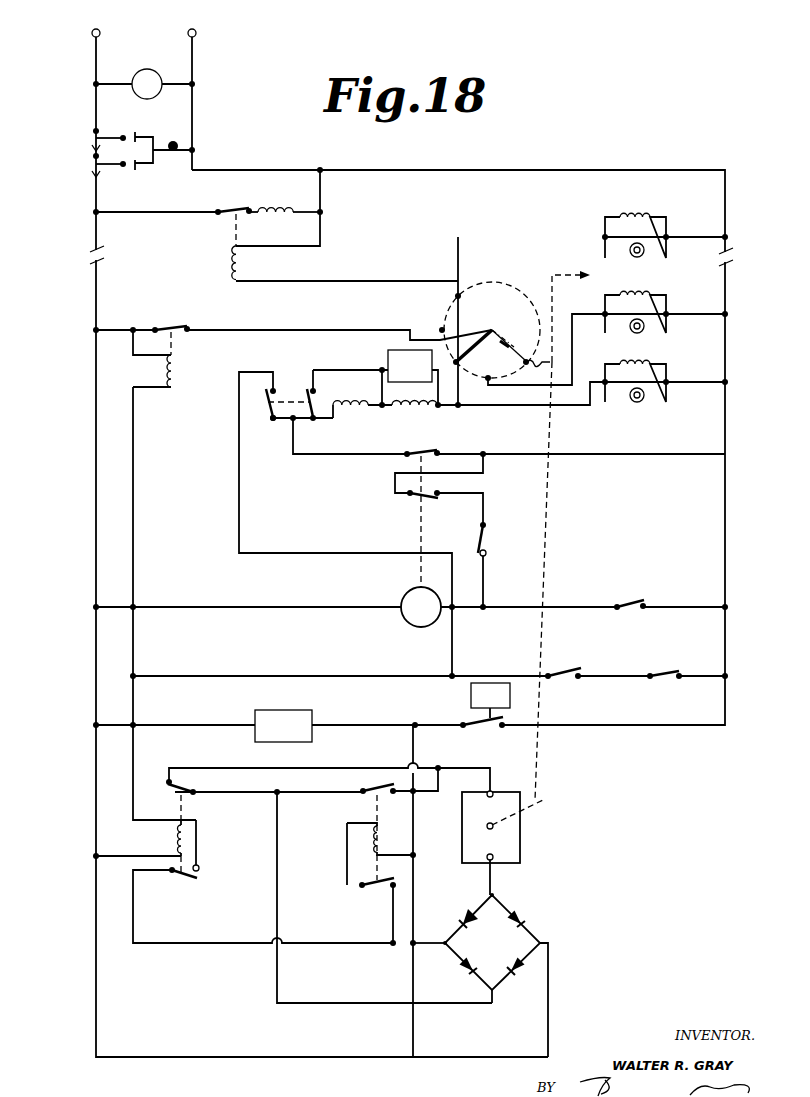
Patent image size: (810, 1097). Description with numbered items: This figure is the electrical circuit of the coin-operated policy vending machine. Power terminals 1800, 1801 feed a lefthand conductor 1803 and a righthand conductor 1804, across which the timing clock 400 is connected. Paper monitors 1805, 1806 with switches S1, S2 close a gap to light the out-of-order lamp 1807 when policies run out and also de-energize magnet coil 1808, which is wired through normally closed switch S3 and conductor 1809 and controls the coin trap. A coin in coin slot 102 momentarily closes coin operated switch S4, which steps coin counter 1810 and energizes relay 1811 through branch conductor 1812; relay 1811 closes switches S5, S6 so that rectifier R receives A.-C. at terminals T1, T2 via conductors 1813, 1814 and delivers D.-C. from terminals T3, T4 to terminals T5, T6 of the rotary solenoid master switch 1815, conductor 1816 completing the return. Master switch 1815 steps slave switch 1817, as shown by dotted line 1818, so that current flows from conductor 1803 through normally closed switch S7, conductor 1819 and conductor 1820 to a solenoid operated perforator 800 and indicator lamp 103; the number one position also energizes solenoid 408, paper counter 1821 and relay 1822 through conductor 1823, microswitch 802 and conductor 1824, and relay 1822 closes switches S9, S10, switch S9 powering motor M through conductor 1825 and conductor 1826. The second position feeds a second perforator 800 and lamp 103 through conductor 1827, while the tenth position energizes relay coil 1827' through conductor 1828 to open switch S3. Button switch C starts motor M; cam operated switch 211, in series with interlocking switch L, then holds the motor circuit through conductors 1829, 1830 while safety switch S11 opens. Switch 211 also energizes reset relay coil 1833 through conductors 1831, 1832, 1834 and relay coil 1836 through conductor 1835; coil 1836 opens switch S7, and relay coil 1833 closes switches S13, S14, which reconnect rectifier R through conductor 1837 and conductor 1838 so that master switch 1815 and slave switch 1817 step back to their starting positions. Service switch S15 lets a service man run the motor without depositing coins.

The power terminal 1800 is at (100, 30).
The power terminal 1801 is at (196, 30).
The timing clock 400 is at (148, 68).
The paper monitor 1805 is at (136, 134).
The paper monitor 1806 is at (135, 170).
The out-of-order light 1807 is at (178, 143).
The magnet coil 1808 is at (294, 196).
The conductor 1809 is at (322, 190).
The righthand conductor 1804 is at (460, 170).
The lefthand conductor 1803 is at (96, 486).
The solenoid operated perforator 800 is at (636, 214).
The indicator lamp 103 is at (650, 240).
The relay coil 1827' is at (266, 263).
The conductor 1828 is at (340, 280).
The slave switch 1817 is at (489, 279).
The conductor 1819 is at (288, 330).
The relay coil 1836 is at (176, 368).
The conductor 1835 is at (133, 582).
The paper counter 1821 is at (386, 357).
The relay 1822 is at (338, 410).
The solenoid 408 is at (416, 408).
The conductor 1820 is at (486, 405).
The microswitch 802 is at (437, 454).
The conductor 1823 is at (320, 458).
The conductor 1824 is at (590, 460).
The conductor 1827 is at (555, 349).
The conductor 1825 is at (240, 529).
The conductor 1826 is at (262, 607).
The conductor 1830 is at (452, 650).
The conductor 1831 is at (291, 676).
The dotted line 1818 is at (542, 546).
The cam operated switch 211 is at (562, 664).
The conductor 1829 is at (620, 674).
The coin counter 1810 is at (312, 716).
The coin slot 102 is at (471, 704).
The conductor 1832 is at (166, 768).
The conductor 1838 is at (271, 768).
The branch conductor 1812 is at (412, 754).
The reset relay coil 1833 is at (187, 839).
The conductor 1834 is at (110, 856).
The conductor 1816 is at (277, 874).
The relay 1811 is at (380, 838).
The master switch 1815 is at (520, 835).
The conductor 1837 is at (170, 943).
The conductor 1814 is at (393, 932).
The conductor 1813 is at (404, 948).
The switch S1 is at (88, 138).
The switch S2 is at (96, 164).
The normally closed switch S3 is at (232, 216).
The coin operated switch S4 is at (485, 724).
The switch S5 is at (362, 784).
The switch S6 is at (360, 888).
The normally closed switch S7 is at (170, 330).
The switch S9 is at (268, 418).
The switch S10 is at (305, 389).
The safety switch S11 is at (410, 498).
The normally open switch S13 is at (192, 789).
The normally open switch S14 is at (184, 874).
The service switch S15 is at (629, 598).
The button switch C is at (480, 536).
The interlocking switch L is at (664, 678).
The motor M is at (421, 607).
The rectifier R is at (492, 942).
The first rectifier terminal T1 is at (437, 935).
The second rectifier terminal T2 is at (548, 991).
The rectifier terminal T3 is at (501, 893).
The rectifier terminal T4 is at (502, 999).
The master switch terminal T5 is at (495, 858).
The master switch terminal T6 is at (490, 792).